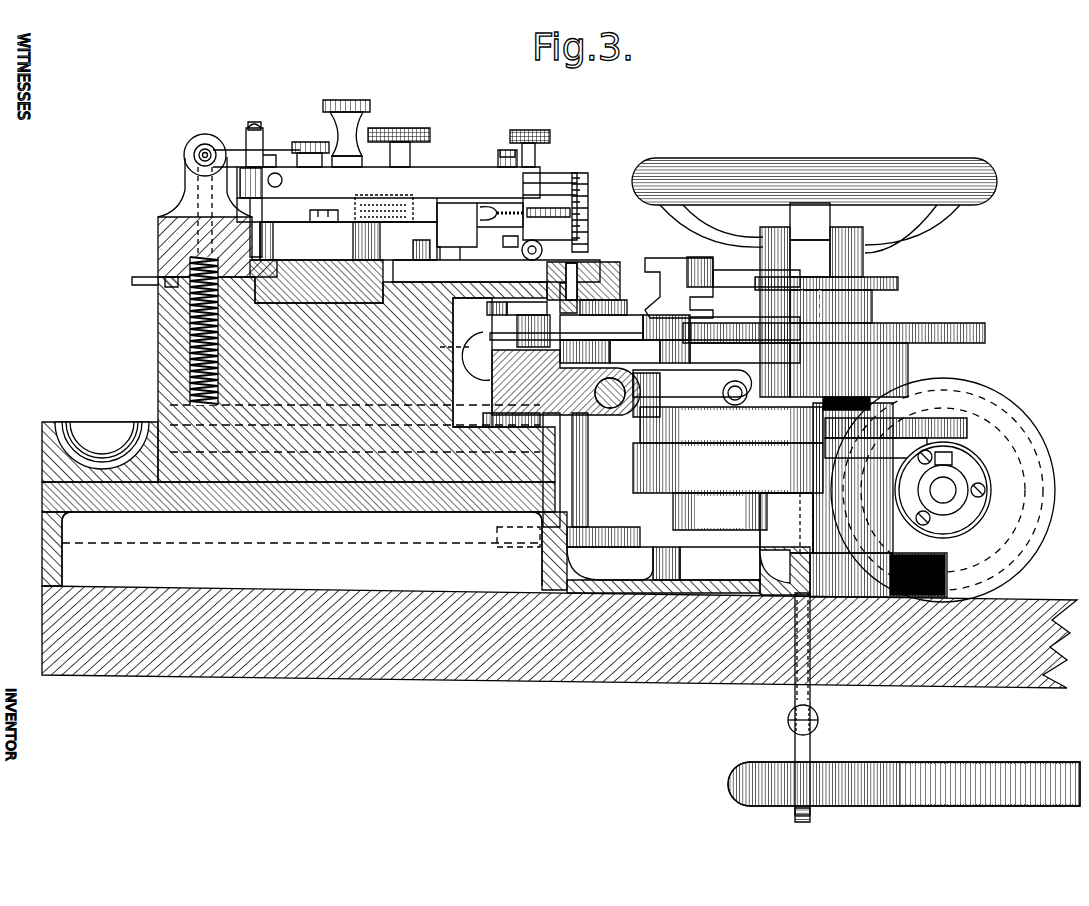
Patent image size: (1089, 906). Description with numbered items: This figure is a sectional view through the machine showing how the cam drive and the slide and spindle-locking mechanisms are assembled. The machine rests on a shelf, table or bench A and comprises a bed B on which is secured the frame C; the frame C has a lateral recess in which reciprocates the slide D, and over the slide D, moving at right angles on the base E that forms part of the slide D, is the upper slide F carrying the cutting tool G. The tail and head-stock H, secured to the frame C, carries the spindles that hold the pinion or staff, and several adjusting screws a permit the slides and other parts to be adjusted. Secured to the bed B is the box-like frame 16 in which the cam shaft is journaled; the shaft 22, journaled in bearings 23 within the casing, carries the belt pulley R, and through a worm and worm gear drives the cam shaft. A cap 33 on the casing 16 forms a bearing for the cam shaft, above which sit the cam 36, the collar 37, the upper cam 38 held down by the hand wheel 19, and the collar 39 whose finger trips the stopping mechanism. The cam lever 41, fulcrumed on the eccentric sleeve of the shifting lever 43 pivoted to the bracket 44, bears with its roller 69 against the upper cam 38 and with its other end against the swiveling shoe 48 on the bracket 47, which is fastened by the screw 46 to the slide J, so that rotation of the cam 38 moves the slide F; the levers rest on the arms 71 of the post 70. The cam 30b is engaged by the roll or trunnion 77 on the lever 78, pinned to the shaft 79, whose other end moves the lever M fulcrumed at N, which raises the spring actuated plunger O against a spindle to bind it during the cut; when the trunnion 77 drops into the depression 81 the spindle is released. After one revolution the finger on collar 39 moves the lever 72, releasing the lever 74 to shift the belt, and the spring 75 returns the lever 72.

The shelf, table, bench or other support A is at (352, 678).
The bed B is at (452, 510).
The frame C is at (372, 490).
The fulcrum of lever M N is at (262, 437).
The spring actuated plunger O is at (158, 407).
The tail and head-stock H is at (158, 222).
The cutting tool G is at (236, 165).
The upper slide F is at (388, 189).
The base E is at (401, 231).
The slide D is at (316, 281).
The slide J is at (496, 270).
The adjusting screws a is at (310, 142).
The lever M is at (498, 410).
The pulley R is at (1032, 420).
The hand wheel 19 is at (940, 165).
The screw 46 is at (580, 277).
The bracket 47 is at (614, 260).
The swiveling shoe 48 is at (540, 297).
The shifting lever 43 is at (483, 336).
The bracket 44 is at (600, 416).
The outwardly extending arms 71 is at (645, 339).
The rollers 69 is at (690, 267).
The cam lever 41 is at (713, 272).
The upper cam 38 is at (878, 283).
The collar 37 is at (868, 308).
The cam 36 is at (980, 325).
The collar 39 is at (905, 366).
The box-like frame 16 is at (853, 500).
The cap 33 is at (935, 413).
The shaft 22 is at (955, 478).
The bearings 23 is at (950, 508).
The roll or trunnion 77 is at (748, 390).
The lever 78 is at (692, 393).
The cam 30b is at (731, 425).
The depression 81 is at (697, 403).
The shaft 79 is at (582, 470).
The post or pedestal 70 is at (588, 513).
The lever 72 is at (819, 707).
The spring 75 is at (788, 717).
The lever 74 is at (936, 762).